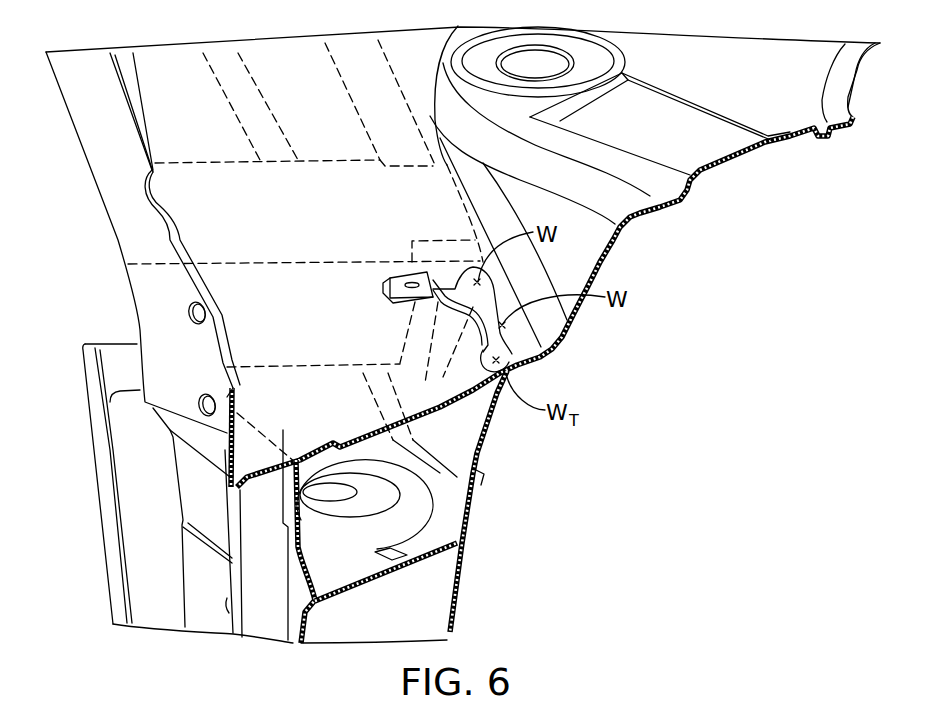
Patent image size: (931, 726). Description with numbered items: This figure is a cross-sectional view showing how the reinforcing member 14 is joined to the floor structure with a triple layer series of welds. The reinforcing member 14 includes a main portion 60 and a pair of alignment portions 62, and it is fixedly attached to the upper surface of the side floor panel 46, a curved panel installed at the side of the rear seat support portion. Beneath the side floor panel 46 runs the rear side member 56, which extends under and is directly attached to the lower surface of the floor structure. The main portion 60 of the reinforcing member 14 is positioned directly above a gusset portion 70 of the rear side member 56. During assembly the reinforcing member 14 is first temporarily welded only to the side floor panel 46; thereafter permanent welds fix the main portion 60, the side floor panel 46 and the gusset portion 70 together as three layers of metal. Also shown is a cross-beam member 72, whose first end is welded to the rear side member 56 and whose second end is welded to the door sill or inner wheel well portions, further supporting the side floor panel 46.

The reinforcing member 14 is at (505, 345).
The side floor panel 46 is at (313, 408).
The rear side member 56 is at (487, 437).
The main portion 60 is at (490, 305).
The alignment portions 62 is at (382, 288).
The gusset portion 70 is at (507, 377).
The cross-beam member 72 is at (230, 215).